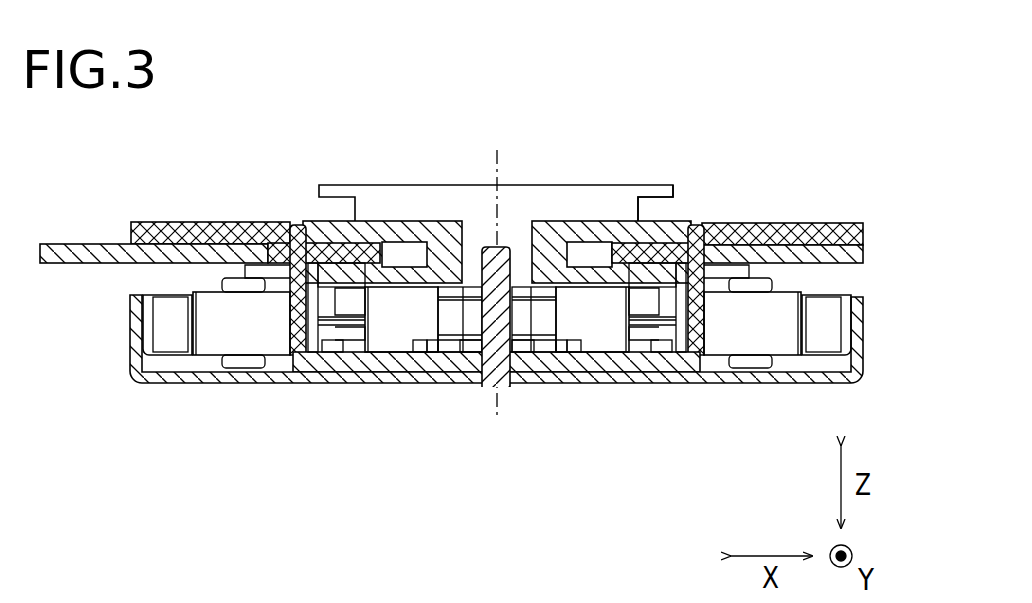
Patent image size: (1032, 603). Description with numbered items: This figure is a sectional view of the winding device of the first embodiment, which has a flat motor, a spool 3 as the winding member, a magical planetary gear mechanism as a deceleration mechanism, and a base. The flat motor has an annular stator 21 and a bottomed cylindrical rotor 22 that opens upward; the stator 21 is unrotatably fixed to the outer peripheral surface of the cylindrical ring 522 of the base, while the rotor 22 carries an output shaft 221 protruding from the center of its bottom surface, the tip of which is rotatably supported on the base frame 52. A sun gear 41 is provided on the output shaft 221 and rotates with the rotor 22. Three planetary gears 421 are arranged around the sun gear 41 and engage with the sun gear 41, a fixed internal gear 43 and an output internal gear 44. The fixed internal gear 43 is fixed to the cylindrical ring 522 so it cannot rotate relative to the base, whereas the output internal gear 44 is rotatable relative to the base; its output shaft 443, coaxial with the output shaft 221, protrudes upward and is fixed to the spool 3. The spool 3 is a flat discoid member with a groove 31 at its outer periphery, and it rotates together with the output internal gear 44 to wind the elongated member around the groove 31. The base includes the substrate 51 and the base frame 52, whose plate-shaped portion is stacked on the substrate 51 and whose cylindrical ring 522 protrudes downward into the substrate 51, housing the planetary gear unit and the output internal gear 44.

The spool 3 is at (608, 198).
The groove 31 is at (655, 208).
The stator 21 is at (780, 307).
The rotor 22 is at (864, 348).
The output shaft 221 is at (477, 357).
The sun gear 41 is at (473, 308).
The planetary gear 421 is at (633, 317).
The fixed internal gear 43 is at (680, 335).
The output internal gear 44 is at (692, 280).
The output shaft 443 is at (443, 240).
The substrate 51 is at (74, 252).
The base frame 52 is at (177, 235).
The cylindrical ring 522 is at (300, 315).